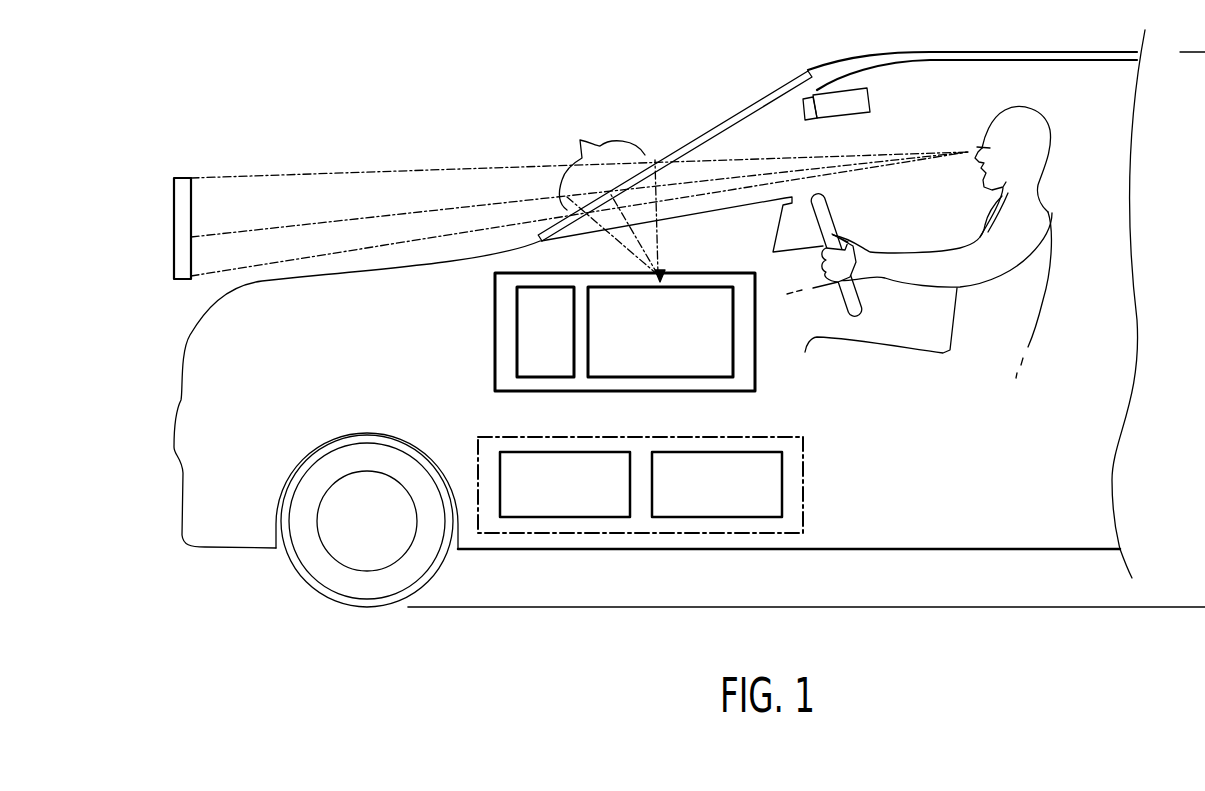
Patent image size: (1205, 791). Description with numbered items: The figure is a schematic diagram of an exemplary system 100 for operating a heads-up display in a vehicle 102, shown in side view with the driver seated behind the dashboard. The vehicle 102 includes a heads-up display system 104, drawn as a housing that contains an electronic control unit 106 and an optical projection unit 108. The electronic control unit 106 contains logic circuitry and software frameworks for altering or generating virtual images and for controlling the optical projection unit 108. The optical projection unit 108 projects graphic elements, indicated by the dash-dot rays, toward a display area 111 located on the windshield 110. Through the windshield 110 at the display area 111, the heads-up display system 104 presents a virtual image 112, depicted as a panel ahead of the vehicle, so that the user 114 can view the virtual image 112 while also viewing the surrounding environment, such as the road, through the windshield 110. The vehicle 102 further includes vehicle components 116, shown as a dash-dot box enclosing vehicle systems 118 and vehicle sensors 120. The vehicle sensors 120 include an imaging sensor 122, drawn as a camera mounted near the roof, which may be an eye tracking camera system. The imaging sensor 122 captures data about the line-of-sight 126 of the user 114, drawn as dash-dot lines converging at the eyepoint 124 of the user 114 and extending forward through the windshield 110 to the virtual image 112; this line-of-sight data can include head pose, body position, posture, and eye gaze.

The system 100 is at (403, 93).
The vehicle 102 is at (1088, 50).
The heads-up display system 104 is at (495, 330).
The electronic control unit 106 is at (517, 355).
The optical projection unit 108 is at (735, 332).
The windshield 110 is at (739, 108).
The display area 111 is at (601, 159).
The virtual image 112 is at (183, 178).
The user 114 is at (1028, 111).
The vehicle components 116 is at (803, 484).
The vehicle systems 118 is at (562, 452).
The vehicle sensors 120 is at (715, 452).
The imaging sensor 122 is at (873, 100).
The eyepoint 124 is at (981, 147).
The line-of-sight 126 is at (840, 163).